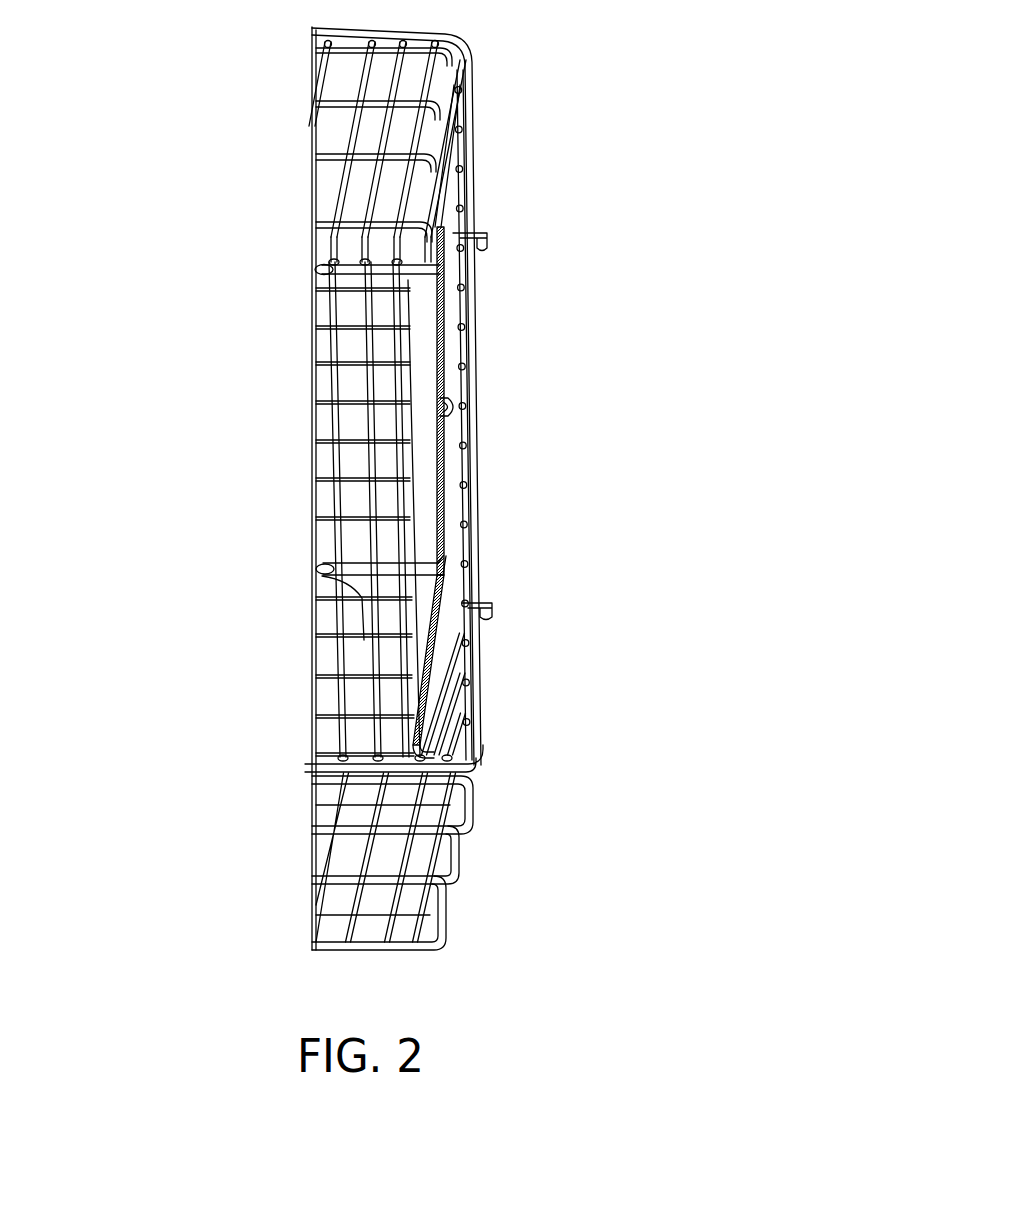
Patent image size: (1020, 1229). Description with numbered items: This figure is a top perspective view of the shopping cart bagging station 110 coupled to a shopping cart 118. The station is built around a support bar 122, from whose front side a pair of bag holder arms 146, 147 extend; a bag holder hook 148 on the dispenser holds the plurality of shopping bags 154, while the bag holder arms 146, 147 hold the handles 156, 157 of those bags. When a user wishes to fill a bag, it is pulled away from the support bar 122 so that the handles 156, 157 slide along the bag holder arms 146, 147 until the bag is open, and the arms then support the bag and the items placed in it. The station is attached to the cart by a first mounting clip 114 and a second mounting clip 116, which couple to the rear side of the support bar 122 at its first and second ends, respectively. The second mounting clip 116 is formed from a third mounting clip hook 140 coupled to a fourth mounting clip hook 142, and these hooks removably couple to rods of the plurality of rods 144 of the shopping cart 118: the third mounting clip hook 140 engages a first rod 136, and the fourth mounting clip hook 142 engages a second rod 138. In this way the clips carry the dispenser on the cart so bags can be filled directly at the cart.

The shopping cart bagging station 110 is at (558, 387).
The first mounting clip 114 is at (478, 244).
The second mounting clip 116 is at (467, 607).
The shopping cart 118 is at (250, 189).
The support bar 122 is at (447, 343).
The first rod 136 is at (470, 158).
The second rod 138 is at (478, 770).
The third mounting clip hook 140 is at (492, 612).
The fourth mounting clip hook 142 is at (475, 625).
The plurality of rods 144 is at (455, 900).
The bag holder arm 146 is at (318, 276).
The bag holder arm 147 is at (318, 565).
The bag holder hook 148 is at (452, 408).
The plurality of shopping bags 154 is at (428, 460).
The handle 156 is at (440, 247).
The handle 157 is at (437, 593).